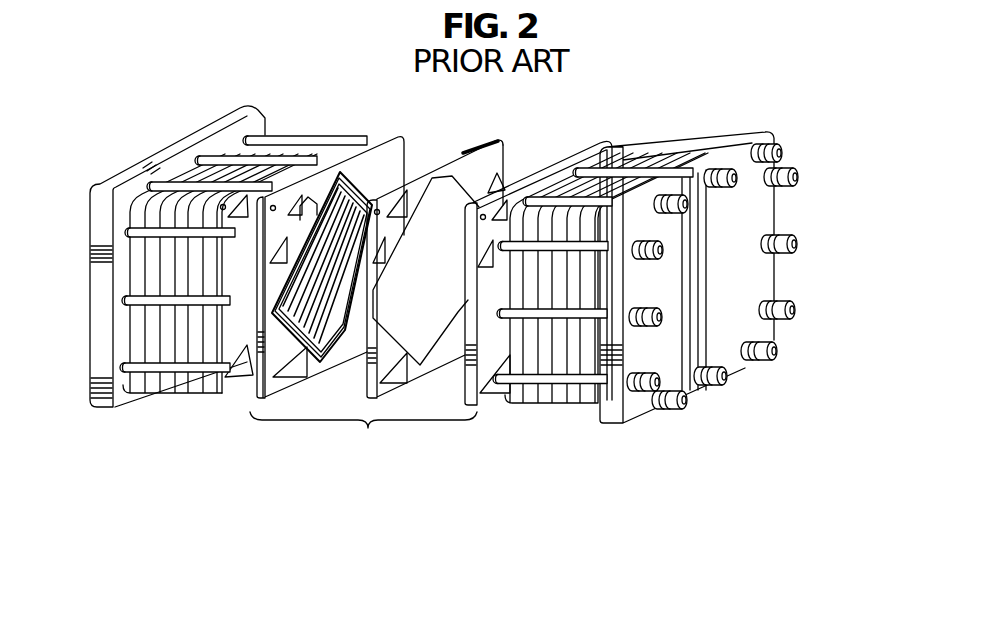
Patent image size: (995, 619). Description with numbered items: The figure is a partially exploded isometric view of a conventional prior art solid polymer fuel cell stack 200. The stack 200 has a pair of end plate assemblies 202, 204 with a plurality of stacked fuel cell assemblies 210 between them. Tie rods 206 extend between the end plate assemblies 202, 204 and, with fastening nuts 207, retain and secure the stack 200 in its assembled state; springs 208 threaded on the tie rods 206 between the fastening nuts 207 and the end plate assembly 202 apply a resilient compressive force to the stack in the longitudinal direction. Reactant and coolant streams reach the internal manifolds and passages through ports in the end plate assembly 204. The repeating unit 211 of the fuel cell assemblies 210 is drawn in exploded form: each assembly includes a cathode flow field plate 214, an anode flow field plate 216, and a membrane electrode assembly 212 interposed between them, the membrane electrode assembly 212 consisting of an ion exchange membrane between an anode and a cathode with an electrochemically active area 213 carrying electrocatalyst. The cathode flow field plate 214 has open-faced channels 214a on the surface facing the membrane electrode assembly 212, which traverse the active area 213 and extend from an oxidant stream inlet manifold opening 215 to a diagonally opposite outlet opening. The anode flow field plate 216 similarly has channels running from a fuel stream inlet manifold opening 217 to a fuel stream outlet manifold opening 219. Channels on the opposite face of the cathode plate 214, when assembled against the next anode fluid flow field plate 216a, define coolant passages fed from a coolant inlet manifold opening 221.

The fuel cell stack 200 is at (446, 267).
The end plate assembly 202 is at (752, 134).
The end plate assembly 204 is at (92, 407).
The tie rods 206 is at (297, 133).
The fastening nuts 207 is at (790, 302).
The springs 208 is at (660, 410).
The fuel cell assemblies 210 is at (163, 388).
The repeating unit 211 is at (363, 435).
The membrane electrode assembly 212 is at (467, 152).
The electrochemically active area 213 is at (430, 343).
The cathode flow field plate 214 is at (407, 137).
The open-faced channels 214a is at (358, 350).
The oxidant stream inlet manifold opening 215 is at (305, 195).
The anode flow field plate 216 is at (580, 135).
The anode fluid flow field plate 216a is at (217, 390).
The fuel stream inlet manifold opening 217 is at (488, 385).
The fuel stream outlet manifold opening 219 is at (497, 180).
The coolant inlet manifold opening 221 is at (280, 242).